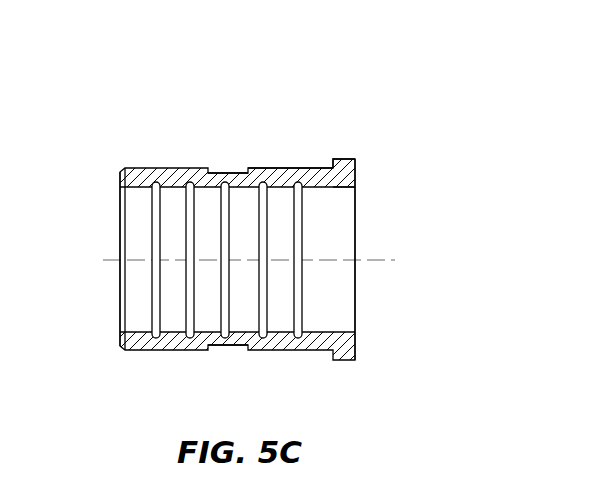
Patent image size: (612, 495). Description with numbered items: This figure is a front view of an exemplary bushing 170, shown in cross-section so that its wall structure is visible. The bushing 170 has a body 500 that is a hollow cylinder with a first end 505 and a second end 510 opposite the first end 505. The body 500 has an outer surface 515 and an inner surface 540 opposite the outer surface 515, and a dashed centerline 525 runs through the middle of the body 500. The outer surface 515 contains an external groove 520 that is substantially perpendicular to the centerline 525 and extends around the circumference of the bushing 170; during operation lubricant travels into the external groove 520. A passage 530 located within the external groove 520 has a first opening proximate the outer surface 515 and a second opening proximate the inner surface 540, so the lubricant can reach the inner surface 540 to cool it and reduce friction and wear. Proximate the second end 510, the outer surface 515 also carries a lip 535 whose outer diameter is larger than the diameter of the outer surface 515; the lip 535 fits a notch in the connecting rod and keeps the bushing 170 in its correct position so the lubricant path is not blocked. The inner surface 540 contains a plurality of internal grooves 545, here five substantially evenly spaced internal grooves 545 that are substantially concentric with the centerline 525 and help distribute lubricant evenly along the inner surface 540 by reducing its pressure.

The bushing 170 is at (134, 118).
The body 500 is at (345, 340).
The first end 505 is at (107, 377).
The second end 510 is at (383, 378).
The outer surface 515 is at (270, 168).
The external groove 520 is at (228, 168).
The centerline 525 is at (110, 259).
The passage 530 is at (223, 352).
The lip 535 is at (347, 160).
The inner surface 540 is at (332, 190).
The internal groove 545 is at (153, 300).